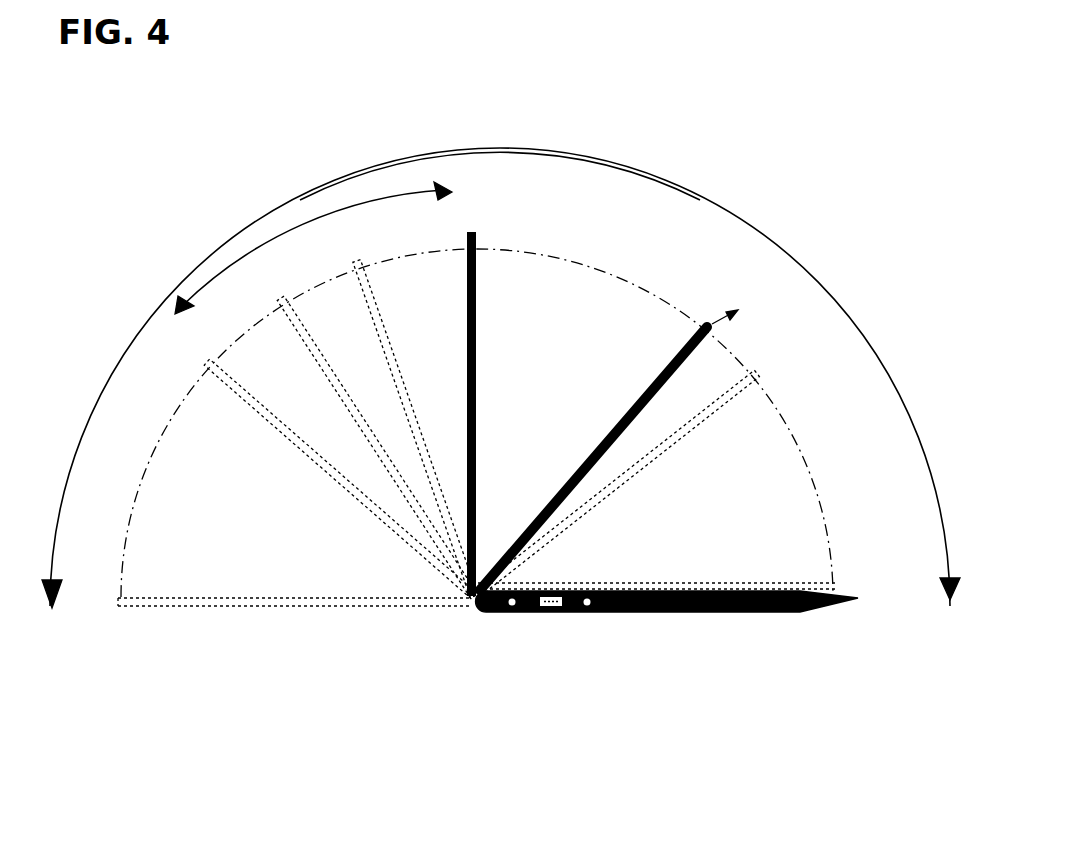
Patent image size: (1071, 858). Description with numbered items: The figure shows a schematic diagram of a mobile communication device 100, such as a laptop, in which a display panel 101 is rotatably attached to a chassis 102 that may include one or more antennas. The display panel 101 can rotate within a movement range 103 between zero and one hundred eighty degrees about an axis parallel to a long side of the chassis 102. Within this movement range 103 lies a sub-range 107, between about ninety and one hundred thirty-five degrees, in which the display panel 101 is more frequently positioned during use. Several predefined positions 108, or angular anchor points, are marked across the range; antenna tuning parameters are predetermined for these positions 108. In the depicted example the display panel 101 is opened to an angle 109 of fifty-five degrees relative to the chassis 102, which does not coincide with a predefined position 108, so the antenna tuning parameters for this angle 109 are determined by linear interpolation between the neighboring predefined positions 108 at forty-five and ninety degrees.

The mobile communication device 100 is at (866, 234).
The display panel 101 is at (474, 345).
The chassis 102 is at (658, 624).
The movement range 103 is at (500, 159).
The sub-range 107 is at (313, 248).
The predefined positions 108 is at (468, 427).
The angle 109 is at (631, 438).